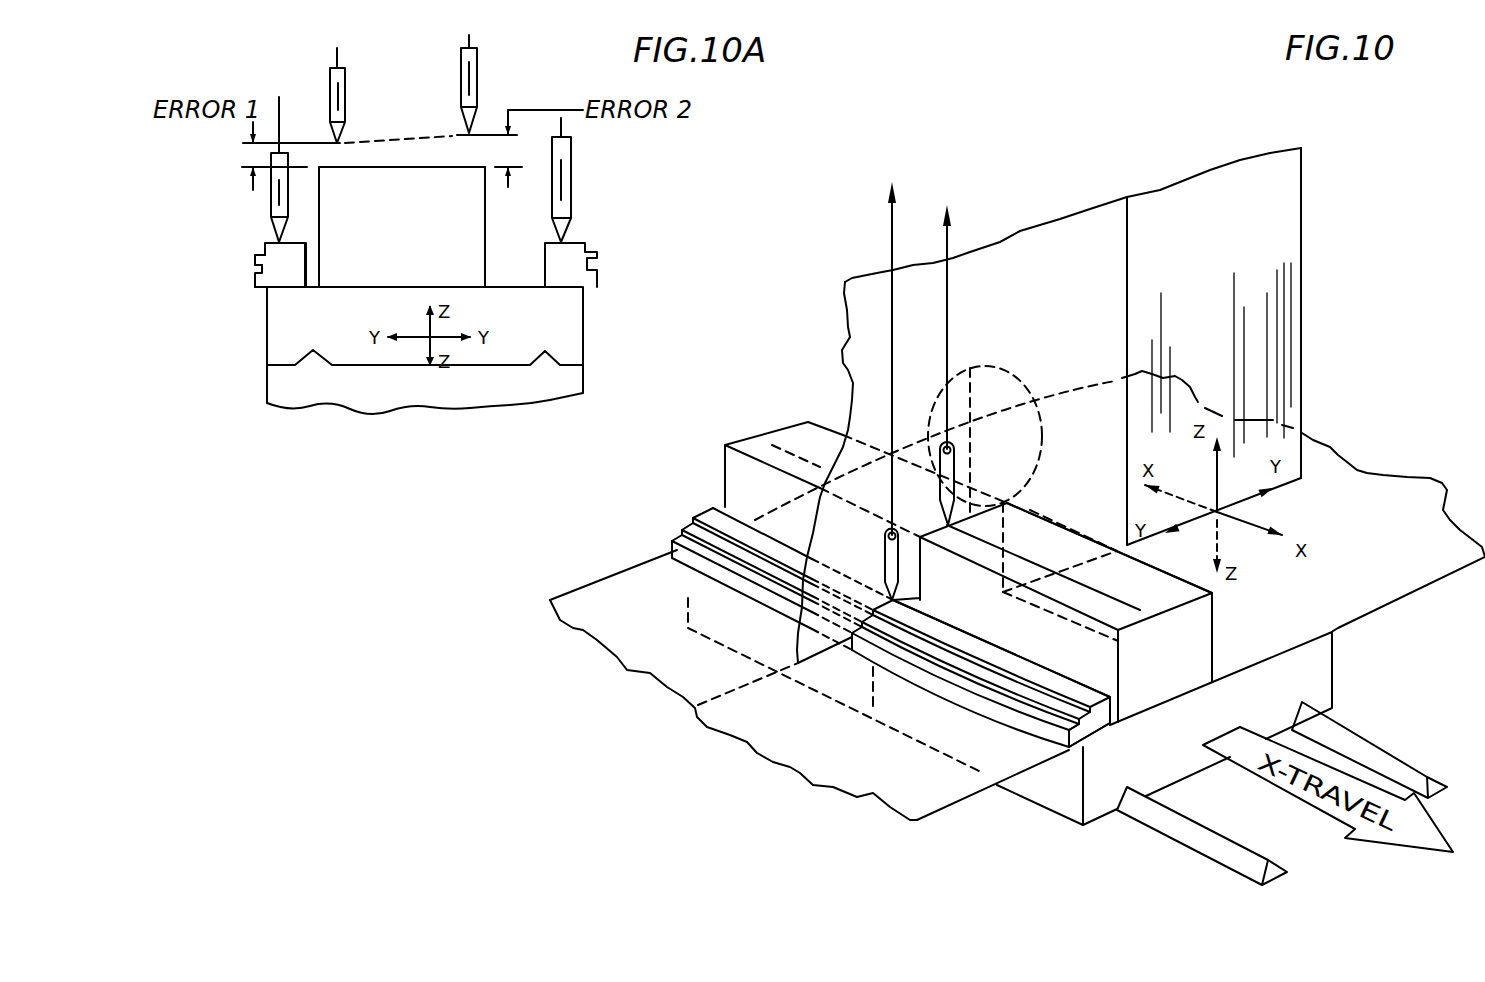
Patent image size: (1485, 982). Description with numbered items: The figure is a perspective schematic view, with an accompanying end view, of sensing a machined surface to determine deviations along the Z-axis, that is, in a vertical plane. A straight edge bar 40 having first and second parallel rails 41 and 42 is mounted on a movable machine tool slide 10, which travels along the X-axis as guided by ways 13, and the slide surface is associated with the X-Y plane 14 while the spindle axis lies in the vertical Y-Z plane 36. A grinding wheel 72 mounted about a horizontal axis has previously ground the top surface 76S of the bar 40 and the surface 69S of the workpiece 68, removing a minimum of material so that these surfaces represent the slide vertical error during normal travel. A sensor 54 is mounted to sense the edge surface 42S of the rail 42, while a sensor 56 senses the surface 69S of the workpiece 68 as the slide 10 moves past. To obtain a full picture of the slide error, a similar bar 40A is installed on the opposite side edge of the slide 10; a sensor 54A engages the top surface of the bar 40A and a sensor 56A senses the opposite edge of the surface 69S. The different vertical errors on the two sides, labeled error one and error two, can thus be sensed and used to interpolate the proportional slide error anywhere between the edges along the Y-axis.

In FIG. 10A, the machine tool slide 10 is at (567, 322).
In FIG. 10, the machine tool slide 10 is at (1322, 660).
In FIG. 10, the ways 13 is at (1370, 745).
In FIG. 10, the X-Y reference plane 14 is at (1388, 587).
In FIG. 10, the Y-Z plane 36 is at (1275, 218).
In FIG. 10A, the bar 40 is at (293, 277).
In FIG. 10, the bar 40 is at (1100, 722).
In FIG. 10A, the bar 40A is at (570, 260).
In FIG. 10A, the first rail 41 is at (257, 287).
In FIG. 10, the first rail 41 is at (1070, 749).
In FIG. 10A, the second rail 42 is at (260, 253).
In FIG. 10, the second rail 42 is at (1087, 732).
In FIG. 10A, the edge surface 42S is at (255, 258).
In FIG. 10A, the sensor 54 is at (288, 202).
In FIG. 10, the sensor 54 is at (950, 405).
In FIG. 10A, the sensor 54A is at (572, 173).
In FIG. 10A, the sensor 56 is at (345, 107).
In FIG. 10, the sensor 56 is at (955, 452).
In FIG. 10A, the sensor 56A is at (477, 77).
In FIG. 10A, the workpiece 68 is at (458, 232).
In FIG. 10, the workpiece 68 is at (1203, 638).
In FIG. 10A, the surface 69S is at (424, 165).
In FIG. 10, the surface 69S is at (1215, 591).
In FIG. 10, the grinding wheel 72 is at (1022, 385).
In FIG. 10A, the top surface 76S is at (306, 243).
In FIG. 10, the top surface 76S is at (1090, 692).